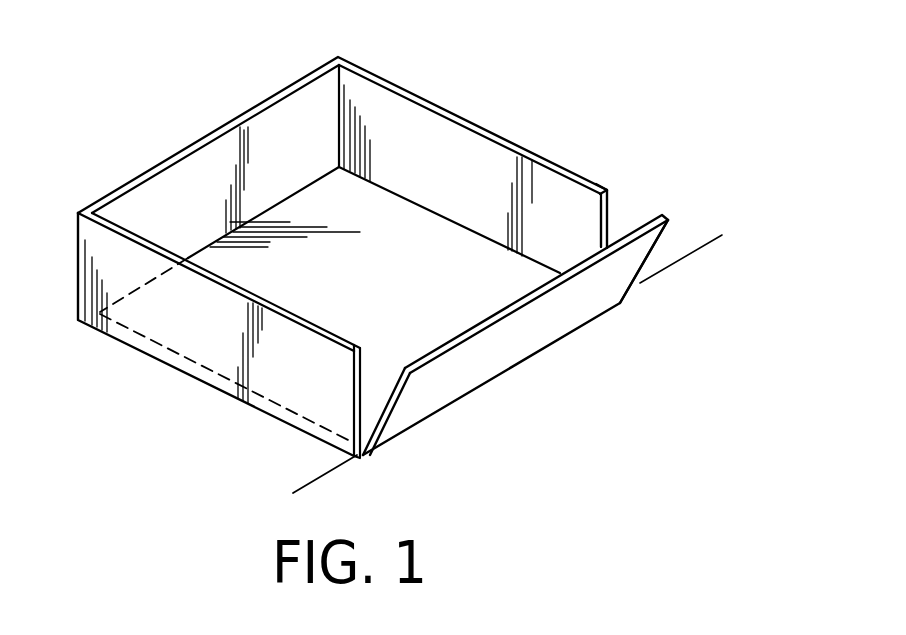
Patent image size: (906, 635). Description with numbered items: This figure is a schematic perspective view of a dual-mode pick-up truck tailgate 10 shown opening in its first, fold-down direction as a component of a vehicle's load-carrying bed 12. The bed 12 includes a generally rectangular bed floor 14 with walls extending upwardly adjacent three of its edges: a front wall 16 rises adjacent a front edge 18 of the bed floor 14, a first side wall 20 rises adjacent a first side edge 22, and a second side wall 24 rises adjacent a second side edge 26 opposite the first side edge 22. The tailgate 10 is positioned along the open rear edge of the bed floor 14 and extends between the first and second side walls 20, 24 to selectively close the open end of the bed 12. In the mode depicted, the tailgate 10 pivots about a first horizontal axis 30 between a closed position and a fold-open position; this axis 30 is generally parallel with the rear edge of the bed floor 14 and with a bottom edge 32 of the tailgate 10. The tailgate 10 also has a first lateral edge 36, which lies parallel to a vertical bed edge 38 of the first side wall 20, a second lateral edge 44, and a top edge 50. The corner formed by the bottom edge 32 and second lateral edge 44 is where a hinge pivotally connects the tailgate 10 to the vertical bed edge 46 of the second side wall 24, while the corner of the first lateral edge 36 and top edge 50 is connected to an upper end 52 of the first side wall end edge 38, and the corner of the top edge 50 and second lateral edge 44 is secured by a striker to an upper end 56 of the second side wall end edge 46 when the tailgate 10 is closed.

The dual-mode tailgate 10 is at (450, 396).
The load-carrying bed 12 is at (518, 100).
The bed floor 14 is at (380, 284).
The front wall 16 is at (194, 214).
The front edge 18 is at (293, 198).
The first side wall 20 is at (195, 326).
The first side edge 22 is at (180, 366).
The second side wall 24 is at (461, 181).
The second side edge 26 is at (468, 226).
The first horizontal axis 30 is at (297, 489).
The bottom edge 32 is at (494, 382).
The first lateral edge 36 is at (403, 420).
The vertical bed edge 38 is at (356, 392).
The second lateral edge 44 is at (670, 222).
The vertical bed edge 46 is at (611, 221).
The top edge 50 is at (547, 295).
The upper end 52 is at (360, 357).
The upper end 56 is at (611, 193).